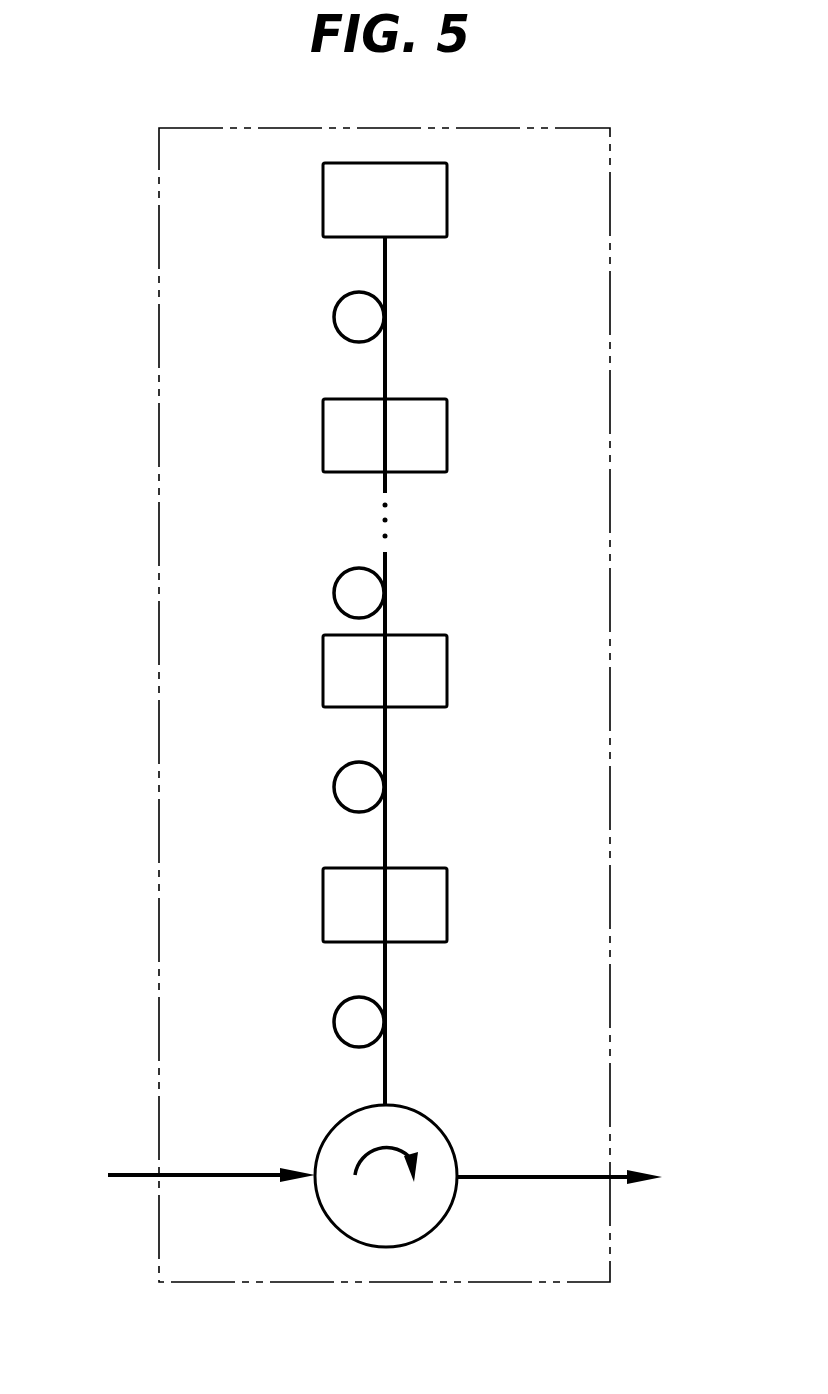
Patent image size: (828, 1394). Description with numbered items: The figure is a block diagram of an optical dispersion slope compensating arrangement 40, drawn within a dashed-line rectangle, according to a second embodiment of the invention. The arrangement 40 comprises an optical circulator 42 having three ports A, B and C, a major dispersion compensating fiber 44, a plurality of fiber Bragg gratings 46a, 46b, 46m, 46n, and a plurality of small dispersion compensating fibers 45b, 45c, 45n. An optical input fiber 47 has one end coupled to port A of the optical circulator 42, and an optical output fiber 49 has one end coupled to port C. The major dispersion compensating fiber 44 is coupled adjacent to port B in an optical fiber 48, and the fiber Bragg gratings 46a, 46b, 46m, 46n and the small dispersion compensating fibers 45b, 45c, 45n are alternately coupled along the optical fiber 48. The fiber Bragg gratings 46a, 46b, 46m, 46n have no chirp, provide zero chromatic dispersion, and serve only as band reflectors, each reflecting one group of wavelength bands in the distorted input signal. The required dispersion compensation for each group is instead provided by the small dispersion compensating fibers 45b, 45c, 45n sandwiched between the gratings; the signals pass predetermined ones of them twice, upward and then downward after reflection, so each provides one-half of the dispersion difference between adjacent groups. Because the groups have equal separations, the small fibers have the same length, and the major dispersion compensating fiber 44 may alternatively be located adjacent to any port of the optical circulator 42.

The optical dispersion slope compensating arrangement 40 is at (159, 425).
The optical circulator 42 is at (327, 1220).
The major dispersion compensating fiber 44 is at (334, 1026).
The small dispersion compensating fiber 45b is at (334, 791).
The small dispersion compensating fiber 45c is at (334, 597).
The small dispersion compensating fiber 45n is at (334, 322).
The fiber Bragg grating 46a is at (323, 917).
The fiber Bragg grating 46b is at (323, 672).
The fiber Bragg grating 46m is at (323, 436).
The fiber Bragg grating 46n is at (323, 205).
The optical input fiber 47 is at (205, 1172).
The optical fiber 48 is at (387, 1078).
The optical output fiber 49 is at (540, 1173).